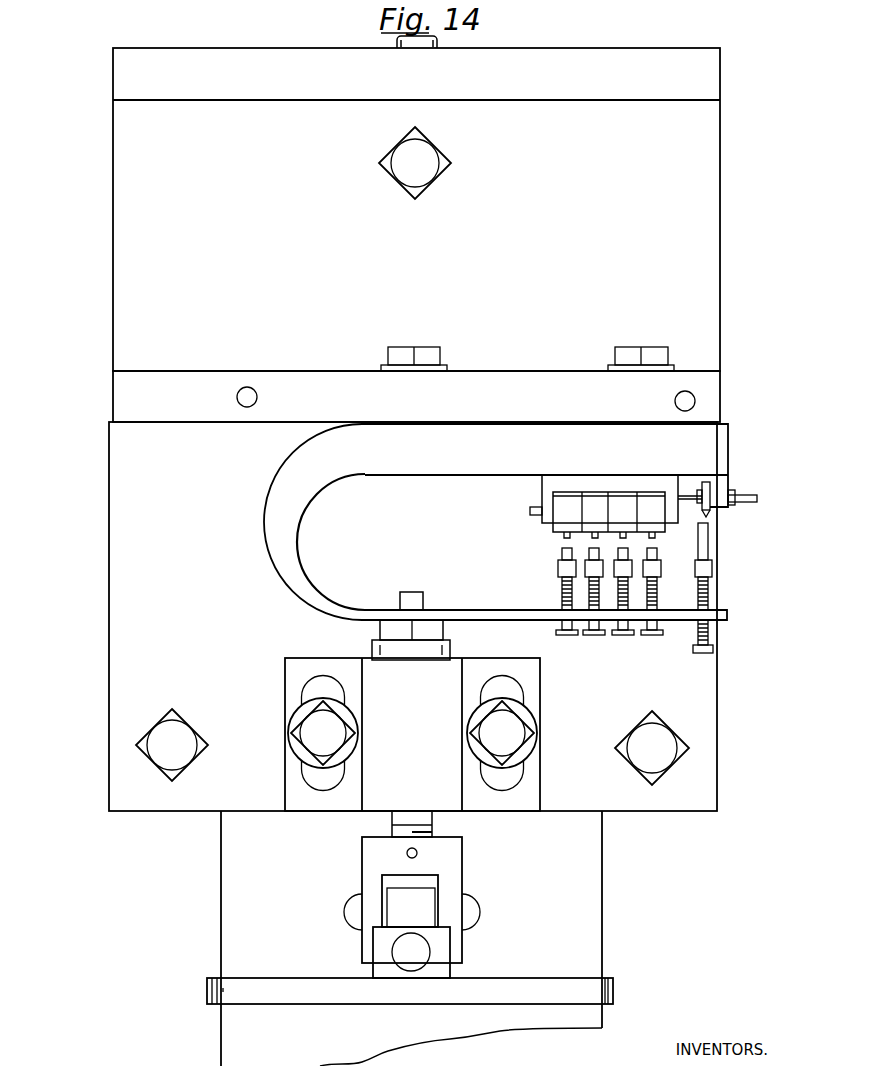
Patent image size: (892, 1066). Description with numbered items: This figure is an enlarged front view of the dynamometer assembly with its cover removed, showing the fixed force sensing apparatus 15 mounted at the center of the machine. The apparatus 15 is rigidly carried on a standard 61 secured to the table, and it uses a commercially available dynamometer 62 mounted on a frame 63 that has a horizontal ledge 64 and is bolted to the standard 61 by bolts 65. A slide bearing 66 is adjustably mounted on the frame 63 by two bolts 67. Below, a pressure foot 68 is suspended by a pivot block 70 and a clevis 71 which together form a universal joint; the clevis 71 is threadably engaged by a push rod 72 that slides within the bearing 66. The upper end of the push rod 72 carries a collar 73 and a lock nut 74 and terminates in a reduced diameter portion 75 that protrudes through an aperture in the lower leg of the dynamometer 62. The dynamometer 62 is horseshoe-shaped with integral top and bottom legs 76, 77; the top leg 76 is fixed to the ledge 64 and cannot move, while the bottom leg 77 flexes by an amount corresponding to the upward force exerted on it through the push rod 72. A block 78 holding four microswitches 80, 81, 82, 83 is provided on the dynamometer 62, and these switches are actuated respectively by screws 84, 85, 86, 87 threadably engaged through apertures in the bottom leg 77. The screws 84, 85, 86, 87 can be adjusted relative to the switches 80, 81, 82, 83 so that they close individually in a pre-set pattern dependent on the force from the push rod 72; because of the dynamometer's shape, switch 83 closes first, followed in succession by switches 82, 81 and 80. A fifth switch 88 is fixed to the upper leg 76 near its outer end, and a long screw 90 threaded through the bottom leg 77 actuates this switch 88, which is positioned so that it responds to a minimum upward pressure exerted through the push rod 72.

The force sensing apparatus 15 is at (88, 464).
The standard 61 is at (602, 870).
The dynamometer 62 is at (264, 554).
The frame 63 is at (406, 259).
The horizontal ledge 64 is at (521, 406).
The bolts 65 is at (438, 178).
The slide bearing 66 is at (542, 700).
The bolts 67 is at (300, 741).
The pressure foot 68 is at (526, 977).
The pivot block 70 is at (401, 917).
The clevis 71 is at (465, 887).
The push rod 72 is at (435, 826).
The collar 73 is at (452, 650).
The lock nut 74 is at (445, 632).
The reduced diameter portion 75 is at (423, 592).
The top leg 76 is at (498, 457).
The bottom leg 77 is at (500, 611).
The block of microswitches 78 is at (542, 491).
The microswitch 80 is at (558, 522).
The microswitch 81 is at (586, 522).
The microswitch 82 is at (614, 522).
The microswitch 83 is at (643, 522).
The screw 84 is at (566, 635).
The screw 85 is at (593, 635).
The screw 86 is at (622, 635).
The screw 87 is at (650, 635).
The fifth switch 88 is at (724, 506).
The long screw 90 is at (714, 572).